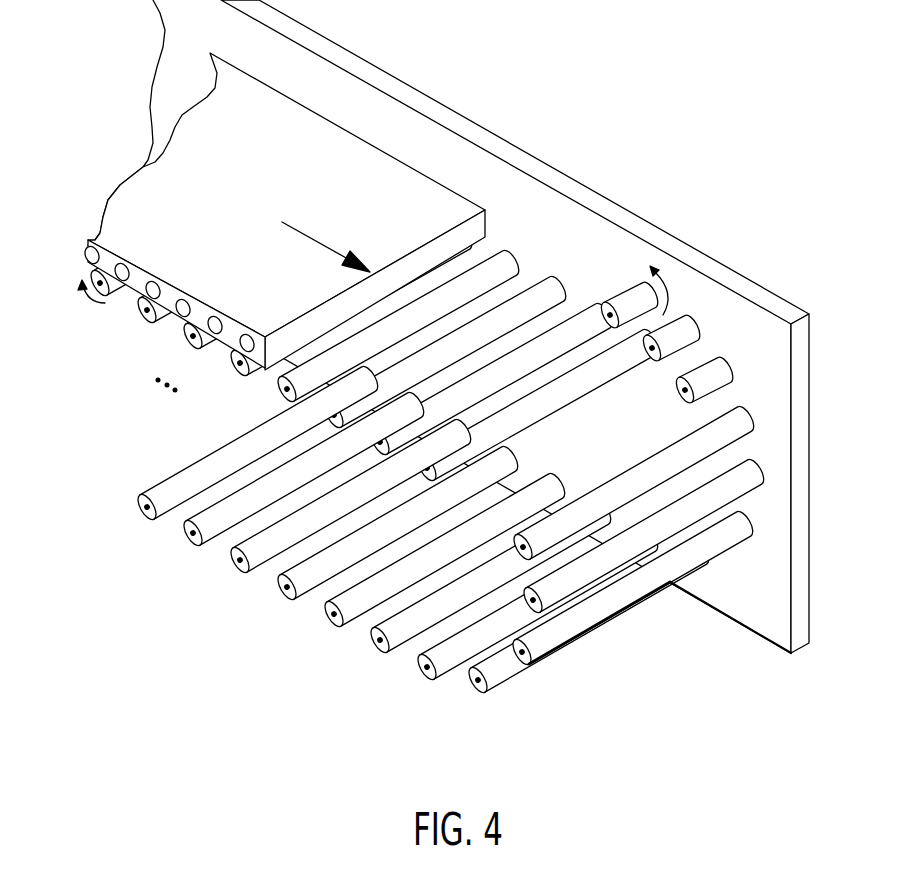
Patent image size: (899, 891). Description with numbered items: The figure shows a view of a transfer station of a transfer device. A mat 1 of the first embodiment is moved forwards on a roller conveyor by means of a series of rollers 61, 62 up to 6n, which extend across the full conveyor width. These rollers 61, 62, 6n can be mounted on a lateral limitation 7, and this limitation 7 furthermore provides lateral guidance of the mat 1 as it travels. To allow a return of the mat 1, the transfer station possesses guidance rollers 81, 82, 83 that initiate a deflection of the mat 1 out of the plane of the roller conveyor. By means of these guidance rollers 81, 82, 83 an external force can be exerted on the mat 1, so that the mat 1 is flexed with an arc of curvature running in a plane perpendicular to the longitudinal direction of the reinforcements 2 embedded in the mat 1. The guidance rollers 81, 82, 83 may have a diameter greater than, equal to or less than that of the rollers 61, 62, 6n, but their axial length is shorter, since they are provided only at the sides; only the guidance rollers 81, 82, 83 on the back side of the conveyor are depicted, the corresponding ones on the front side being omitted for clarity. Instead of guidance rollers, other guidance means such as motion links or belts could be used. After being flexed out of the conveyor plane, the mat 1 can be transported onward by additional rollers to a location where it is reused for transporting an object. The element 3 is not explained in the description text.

The mat 1 is at (118, 155).
The reinforcements 2 is at (88, 253).
The guide holes 3 is at (110, 257).
The roller 61 is at (104, 302).
The roller 62 is at (143, 322).
The roller 6n is at (141, 520).
The lateral limitation 7 is at (573, 217).
The guidance roller 81 is at (636, 296).
The guidance roller 82 is at (685, 318).
The guidance roller 83 is at (707, 375).